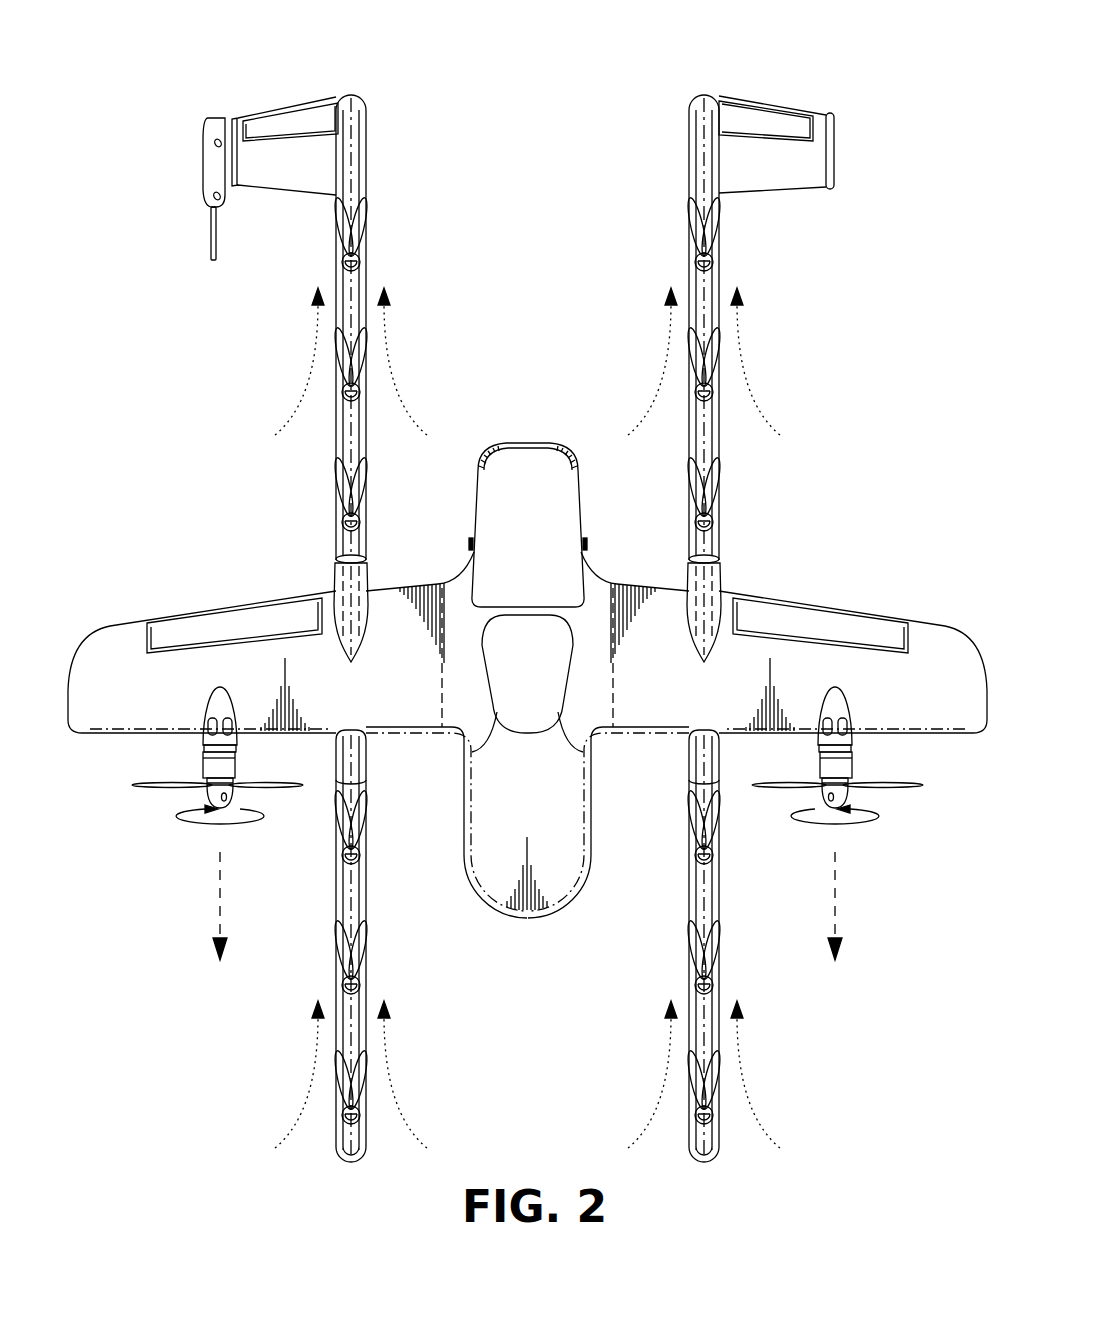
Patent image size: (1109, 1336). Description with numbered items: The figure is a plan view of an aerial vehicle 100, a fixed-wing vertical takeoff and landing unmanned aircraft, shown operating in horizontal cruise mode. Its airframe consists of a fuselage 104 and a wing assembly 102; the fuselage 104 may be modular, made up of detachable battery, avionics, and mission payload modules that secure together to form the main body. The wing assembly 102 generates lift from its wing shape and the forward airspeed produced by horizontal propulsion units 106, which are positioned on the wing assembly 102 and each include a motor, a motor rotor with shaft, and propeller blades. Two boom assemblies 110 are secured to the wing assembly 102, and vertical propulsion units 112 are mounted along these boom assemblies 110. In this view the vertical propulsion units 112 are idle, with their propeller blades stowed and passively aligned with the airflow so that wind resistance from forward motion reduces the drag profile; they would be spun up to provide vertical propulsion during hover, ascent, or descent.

The aerial vehicle 100 is at (140, 330).
The wing assembly 102 is at (157, 699).
The fuselage 104 is at (547, 428).
The horizontal propulsion units 106 is at (163, 832).
The boom assemblies 110 is at (360, 107).
The vertical propulsion units 112 is at (318, 494).